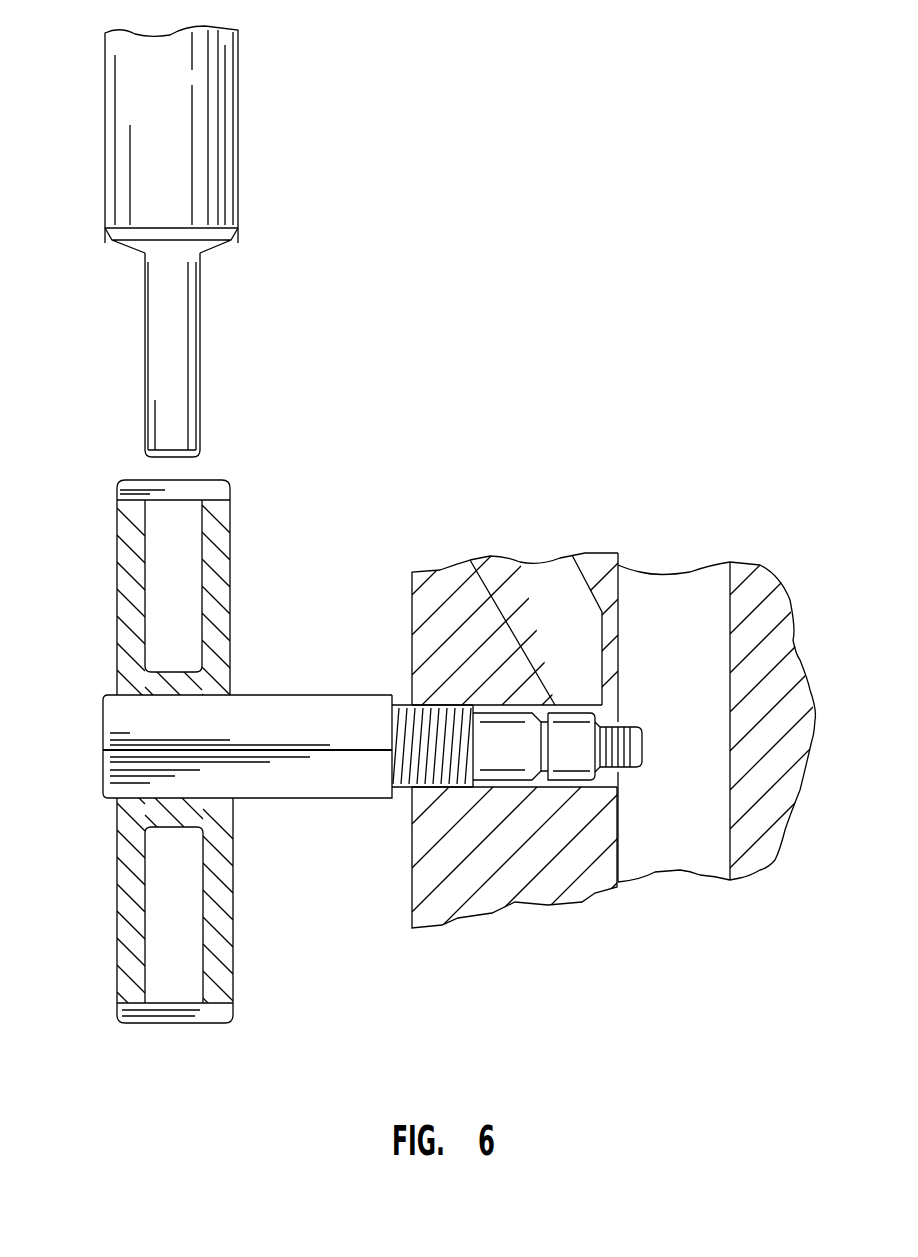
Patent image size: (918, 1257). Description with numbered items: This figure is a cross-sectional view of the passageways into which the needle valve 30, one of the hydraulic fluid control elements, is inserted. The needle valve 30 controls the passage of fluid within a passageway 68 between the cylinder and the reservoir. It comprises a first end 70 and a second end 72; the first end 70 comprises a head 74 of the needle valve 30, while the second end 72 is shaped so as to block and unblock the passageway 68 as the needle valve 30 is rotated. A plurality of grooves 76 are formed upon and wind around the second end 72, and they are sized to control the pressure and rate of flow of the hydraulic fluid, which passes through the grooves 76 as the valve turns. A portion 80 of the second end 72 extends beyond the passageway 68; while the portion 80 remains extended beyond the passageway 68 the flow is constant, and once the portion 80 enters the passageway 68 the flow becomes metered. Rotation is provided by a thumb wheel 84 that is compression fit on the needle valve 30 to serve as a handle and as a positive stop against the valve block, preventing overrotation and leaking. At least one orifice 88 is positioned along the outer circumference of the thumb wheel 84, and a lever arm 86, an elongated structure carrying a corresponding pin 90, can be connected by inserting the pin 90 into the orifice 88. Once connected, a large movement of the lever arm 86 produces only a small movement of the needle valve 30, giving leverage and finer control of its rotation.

The needle valve 30 is at (357, 575).
The passageway 68 is at (625, 715).
The first end 70 is at (238, 708).
The second end 72 is at (565, 732).
The head 74 is at (103, 712).
The grooves 76 is at (645, 768).
The portion 80 is at (640, 725).
The thumb wheel 84 is at (215, 530).
The lever arm 86 is at (215, 170).
The orifice 88 is at (162, 562).
The pin 90 is at (200, 382).